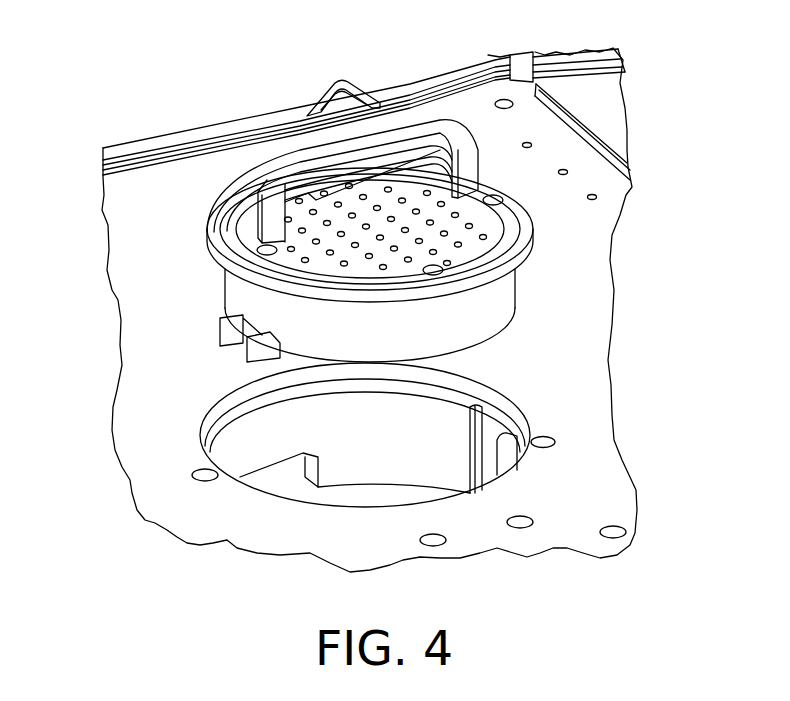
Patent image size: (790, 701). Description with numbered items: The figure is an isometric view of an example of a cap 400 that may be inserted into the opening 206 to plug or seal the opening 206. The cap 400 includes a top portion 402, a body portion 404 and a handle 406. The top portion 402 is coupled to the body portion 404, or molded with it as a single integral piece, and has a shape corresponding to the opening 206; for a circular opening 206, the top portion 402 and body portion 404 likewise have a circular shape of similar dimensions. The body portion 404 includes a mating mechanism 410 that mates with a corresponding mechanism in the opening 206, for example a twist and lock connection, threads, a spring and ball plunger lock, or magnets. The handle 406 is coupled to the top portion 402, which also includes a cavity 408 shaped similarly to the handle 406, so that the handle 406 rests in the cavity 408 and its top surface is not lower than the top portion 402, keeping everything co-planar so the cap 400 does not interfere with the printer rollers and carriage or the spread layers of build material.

The opening 206 is at (475, 447).
The cap 400 is at (367, 190).
The top portion 402 is at (235, 232).
The body portion 404 is at (503, 302).
The handle 406 is at (428, 120).
The cavity 408 is at (320, 188).
The mating mechanism 410 is at (217, 327).